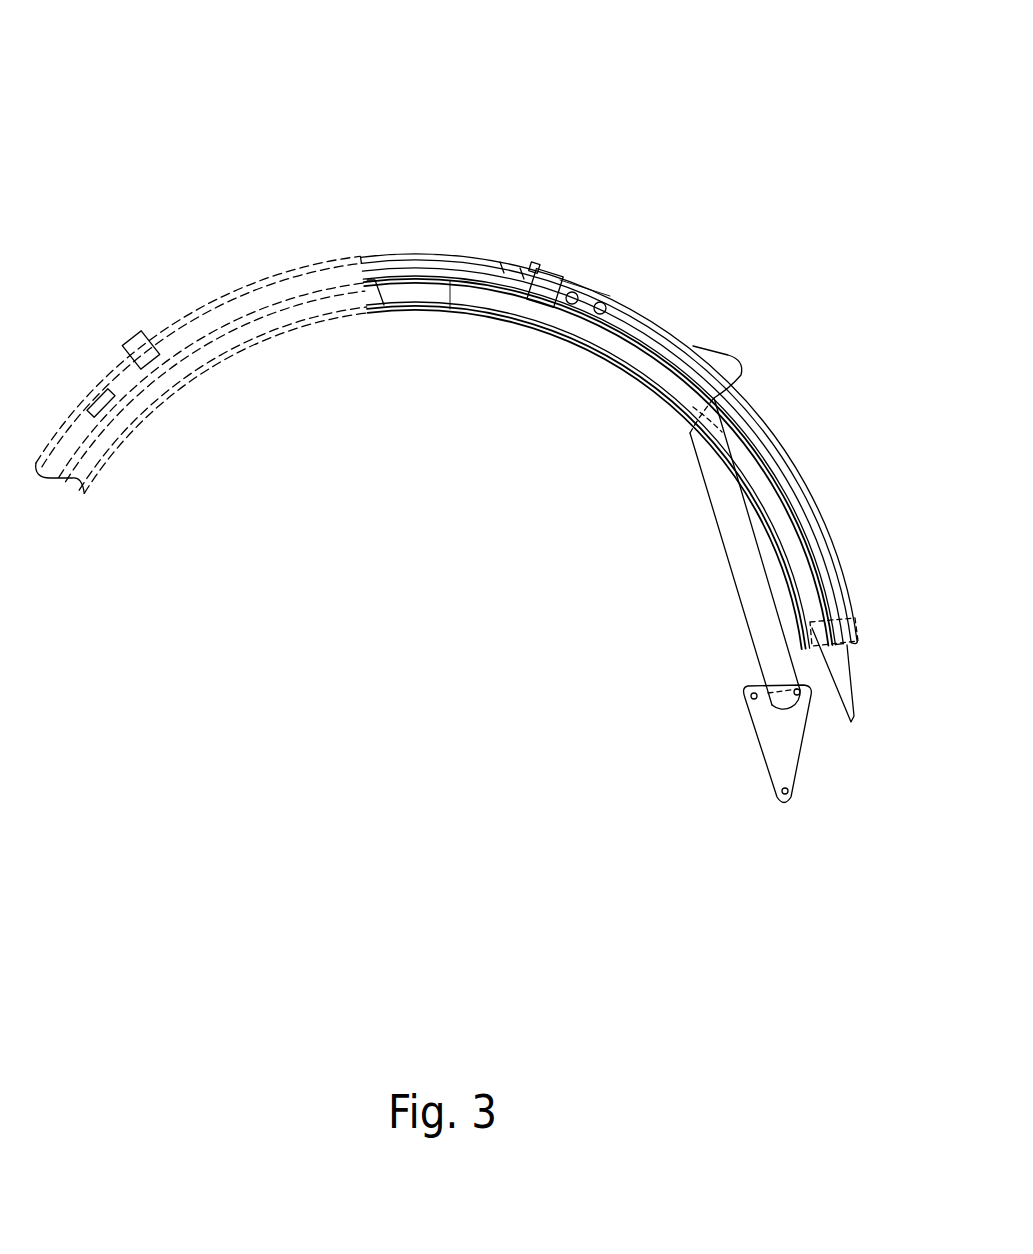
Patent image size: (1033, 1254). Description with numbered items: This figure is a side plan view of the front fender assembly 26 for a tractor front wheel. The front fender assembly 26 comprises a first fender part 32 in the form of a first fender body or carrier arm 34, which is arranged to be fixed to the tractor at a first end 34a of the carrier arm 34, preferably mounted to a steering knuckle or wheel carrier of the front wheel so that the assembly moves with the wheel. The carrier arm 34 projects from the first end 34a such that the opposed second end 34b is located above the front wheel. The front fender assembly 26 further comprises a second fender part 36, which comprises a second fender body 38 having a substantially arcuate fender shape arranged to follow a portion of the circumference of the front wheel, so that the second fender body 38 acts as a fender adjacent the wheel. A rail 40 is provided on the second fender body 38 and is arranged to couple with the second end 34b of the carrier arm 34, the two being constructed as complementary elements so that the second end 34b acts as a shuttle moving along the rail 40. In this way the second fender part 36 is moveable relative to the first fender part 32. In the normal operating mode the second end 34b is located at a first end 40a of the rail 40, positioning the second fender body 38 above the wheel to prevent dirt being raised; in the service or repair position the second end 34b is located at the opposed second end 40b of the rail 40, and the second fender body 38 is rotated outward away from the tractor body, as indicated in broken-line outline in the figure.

The front fender assembly 26 is at (243, 144).
The first fender part 32 is at (760, 218).
The carrier arm 34 is at (703, 357).
The first end of the carrier arm 34a is at (821, 790).
The second end of the carrier arm 34b is at (585, 241).
The second fender part 36 is at (519, 507).
The second fender body 38 is at (478, 300).
The rail 40 is at (792, 477).
The first end of the rail 40a is at (493, 212).
The second end of the rail 40b is at (863, 667).